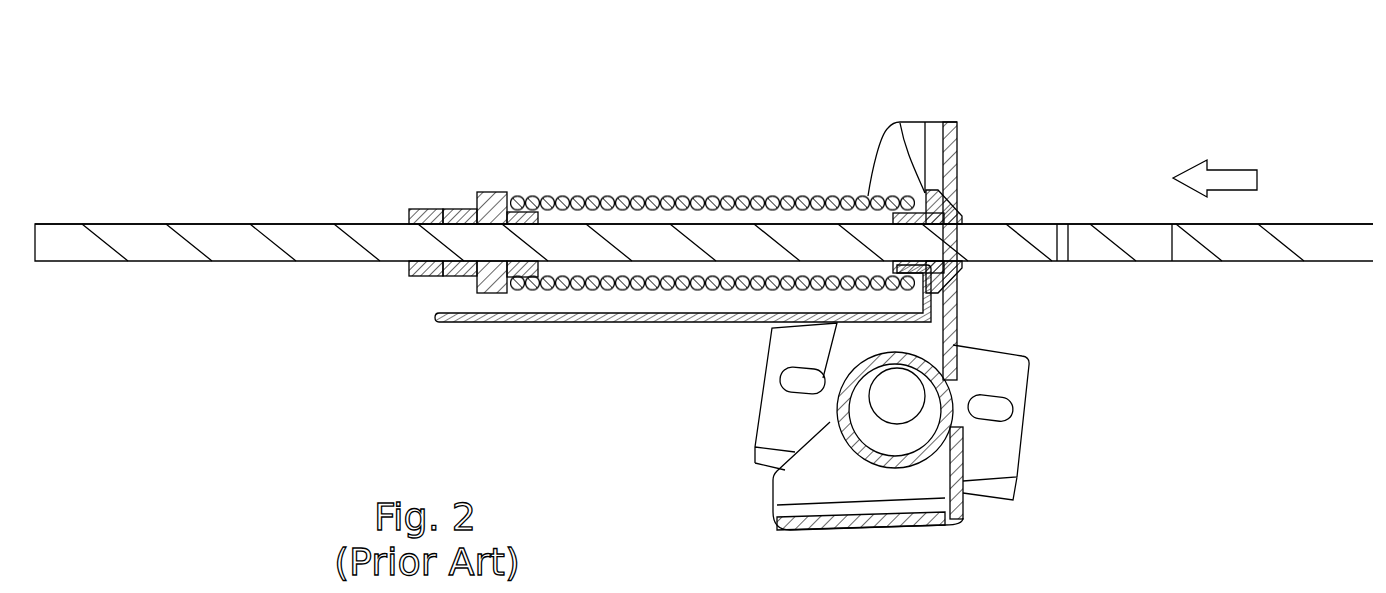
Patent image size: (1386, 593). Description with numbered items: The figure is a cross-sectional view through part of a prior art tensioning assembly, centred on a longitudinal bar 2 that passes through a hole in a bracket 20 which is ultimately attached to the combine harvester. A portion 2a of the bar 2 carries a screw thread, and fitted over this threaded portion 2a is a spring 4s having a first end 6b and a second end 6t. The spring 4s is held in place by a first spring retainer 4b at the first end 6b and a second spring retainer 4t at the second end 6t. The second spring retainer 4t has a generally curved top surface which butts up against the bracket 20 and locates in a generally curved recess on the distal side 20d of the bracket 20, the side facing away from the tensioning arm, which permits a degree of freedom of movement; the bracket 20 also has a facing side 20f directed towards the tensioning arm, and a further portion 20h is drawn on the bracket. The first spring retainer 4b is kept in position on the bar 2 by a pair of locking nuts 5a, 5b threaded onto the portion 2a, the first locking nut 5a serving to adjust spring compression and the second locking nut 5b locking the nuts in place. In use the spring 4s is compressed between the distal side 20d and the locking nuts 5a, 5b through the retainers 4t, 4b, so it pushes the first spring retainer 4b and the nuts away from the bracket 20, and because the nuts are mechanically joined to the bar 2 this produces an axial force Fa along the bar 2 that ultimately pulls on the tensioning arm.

The longitudinal bar 2 is at (1262, 262).
The threaded portion of the bar 2a is at (213, 237).
The first spring retainer 4b is at (497, 192).
The spring 4s is at (697, 195).
The second spring retainer 4t is at (920, 190).
The first locking nut 5a is at (455, 209).
The second locking nut 5b is at (420, 209).
The first end of the spring 6b is at (530, 205).
The second end of the spring 6t is at (885, 188).
The bracket 20 is at (958, 312).
The distal side of the bracket 20d is at (938, 122).
The facing side of the bracket 20f is at (957, 153).
The bracket hook 20h is at (962, 222).
The axial force Fa is at (1215, 165).